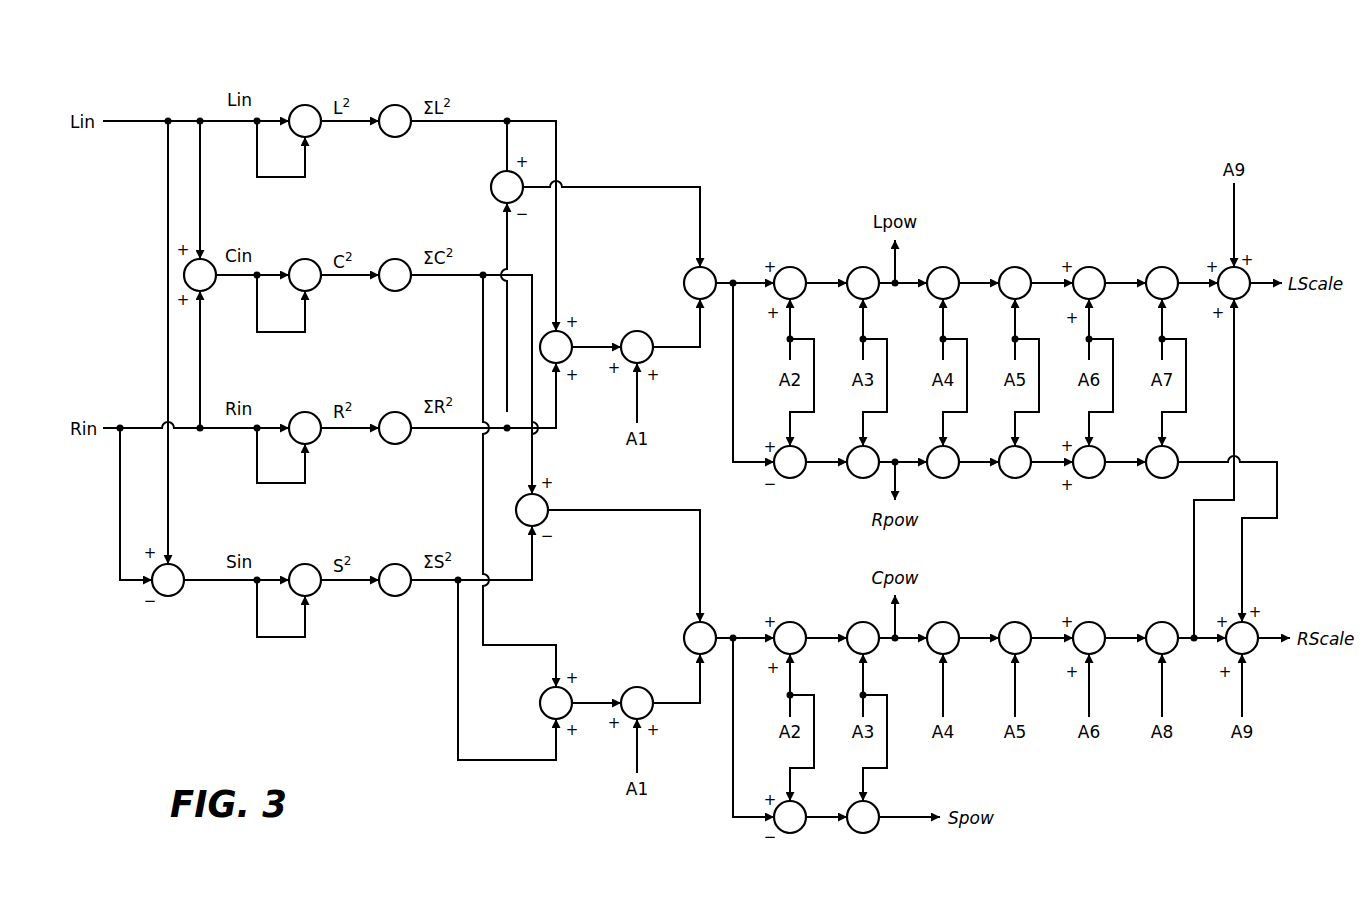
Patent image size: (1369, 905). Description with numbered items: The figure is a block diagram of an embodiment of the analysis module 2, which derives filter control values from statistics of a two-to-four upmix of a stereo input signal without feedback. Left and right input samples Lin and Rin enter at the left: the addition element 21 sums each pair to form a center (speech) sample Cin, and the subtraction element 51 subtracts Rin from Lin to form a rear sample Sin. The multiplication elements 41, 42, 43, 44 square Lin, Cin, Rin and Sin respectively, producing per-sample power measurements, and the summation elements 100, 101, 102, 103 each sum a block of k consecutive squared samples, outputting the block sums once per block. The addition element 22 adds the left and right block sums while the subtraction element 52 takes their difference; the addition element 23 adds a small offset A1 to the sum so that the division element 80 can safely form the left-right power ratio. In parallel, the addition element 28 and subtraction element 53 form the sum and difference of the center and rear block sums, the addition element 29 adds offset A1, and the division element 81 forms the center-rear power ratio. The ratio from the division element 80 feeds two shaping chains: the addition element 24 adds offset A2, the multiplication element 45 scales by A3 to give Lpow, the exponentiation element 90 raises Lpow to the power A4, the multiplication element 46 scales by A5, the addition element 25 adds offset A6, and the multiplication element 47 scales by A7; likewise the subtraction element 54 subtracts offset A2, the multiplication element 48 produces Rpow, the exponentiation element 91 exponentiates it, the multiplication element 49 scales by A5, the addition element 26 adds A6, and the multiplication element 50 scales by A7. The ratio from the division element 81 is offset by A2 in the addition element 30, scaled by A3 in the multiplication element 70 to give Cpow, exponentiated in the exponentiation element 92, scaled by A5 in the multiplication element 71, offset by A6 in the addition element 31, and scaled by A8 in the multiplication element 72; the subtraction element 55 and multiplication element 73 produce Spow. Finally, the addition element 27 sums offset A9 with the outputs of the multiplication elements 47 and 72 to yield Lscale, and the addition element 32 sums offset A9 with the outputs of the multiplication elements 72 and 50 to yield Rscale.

The analysis module 2 is at (1136, 100).
The multiplication element 41 is at (305, 104).
The multiplication element 42 is at (305, 258).
The multiplication element 43 is at (305, 411).
The multiplication element 44 is at (305, 563).
The summation element 100 is at (395, 104).
The summation element 101 is at (395, 258).
The summation element 102 is at (395, 411).
The summation element 103 is at (395, 563).
The addition element 21 is at (205, 258).
The subtraction element 51 is at (173, 563).
The subtraction element 52 is at (496, 175).
The subtraction element 53 is at (546, 500).
The addition element 22 is at (568, 336).
The addition element 23 is at (637, 331).
The division element 80 is at (689, 272).
The addition element 28 is at (568, 692).
The addition element 29 is at (637, 687).
The division element 81 is at (689, 627).
The addition element 24 is at (795, 268).
The multiplication element 45 is at (868, 268).
The exponentiation element 90 is at (947, 268).
The multiplication element 46 is at (1019, 268).
The addition element 25 is at (1093, 268).
The multiplication element 47 is at (1166, 268).
The addition element 27 is at (1245, 271).
The subtraction element 54 is at (800, 447).
The multiplication element 48 is at (873, 447).
The exponentiation element 91 is at (953, 447).
The multiplication element 49 is at (1025, 447).
The addition element 26 is at (1099, 447).
The multiplication element 50 is at (1172, 447).
The addition element 30 is at (795, 623).
The multiplication element 70 is at (868, 623).
The exponentiation element 92 is at (947, 623).
The multiplication element 71 is at (1019, 623).
The addition element 31 is at (1093, 623).
The multiplication element 72 is at (1162, 621).
The addition element 32 is at (1253, 626).
The subtraction element 55 is at (800, 802).
The multiplication element 73 is at (873, 802).